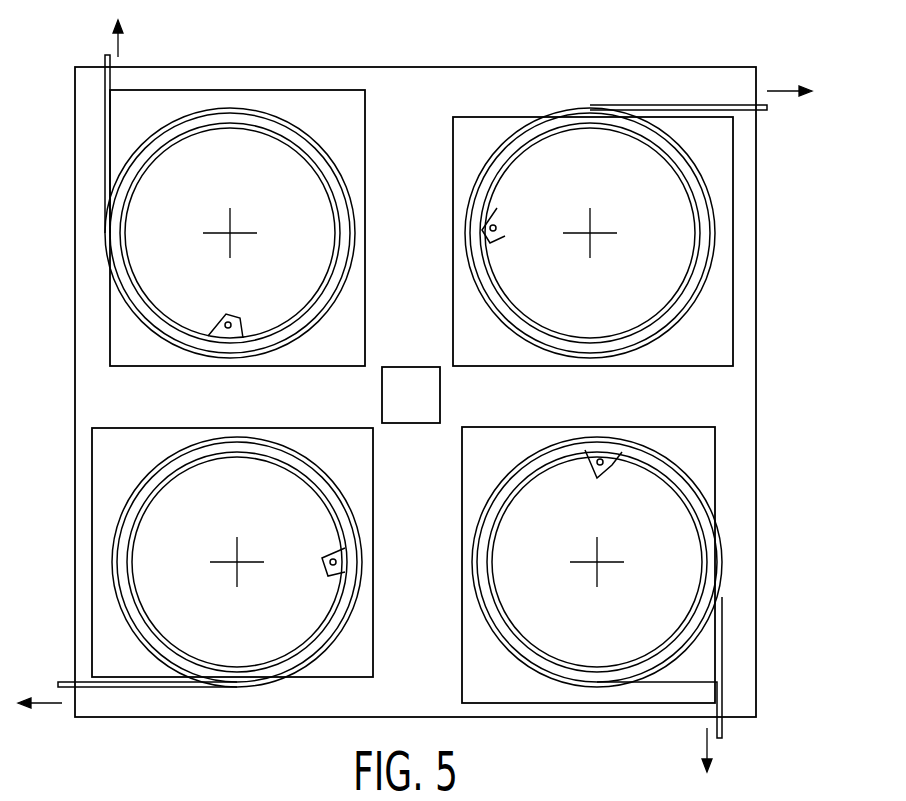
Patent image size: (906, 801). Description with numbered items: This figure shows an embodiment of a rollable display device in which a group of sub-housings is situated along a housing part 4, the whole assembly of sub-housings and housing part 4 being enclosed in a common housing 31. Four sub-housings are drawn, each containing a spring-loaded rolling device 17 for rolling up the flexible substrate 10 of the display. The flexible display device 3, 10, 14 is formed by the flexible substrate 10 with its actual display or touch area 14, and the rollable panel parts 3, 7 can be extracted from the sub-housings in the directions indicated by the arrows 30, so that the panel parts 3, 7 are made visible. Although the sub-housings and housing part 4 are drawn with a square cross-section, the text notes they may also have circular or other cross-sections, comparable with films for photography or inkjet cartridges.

The rollable panel part 3 is at (414, 404).
The rollable panel part 7 is at (414, 404).
The flexible substrate 10 is at (147, 725).
The display or touch area 14 is at (185, 688).
The rolling device 17 is at (212, 223).
The housing part 4 is at (408, 419).
The arrows 30 is at (119, 47).
The common housing 31 is at (75, 320).